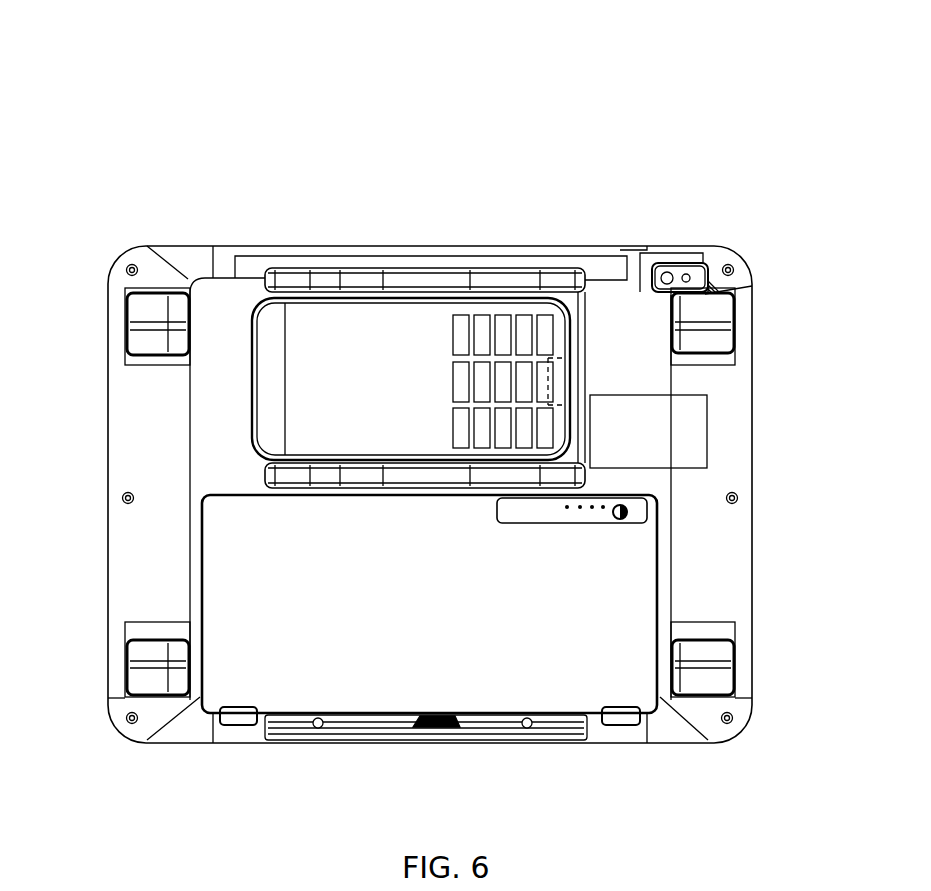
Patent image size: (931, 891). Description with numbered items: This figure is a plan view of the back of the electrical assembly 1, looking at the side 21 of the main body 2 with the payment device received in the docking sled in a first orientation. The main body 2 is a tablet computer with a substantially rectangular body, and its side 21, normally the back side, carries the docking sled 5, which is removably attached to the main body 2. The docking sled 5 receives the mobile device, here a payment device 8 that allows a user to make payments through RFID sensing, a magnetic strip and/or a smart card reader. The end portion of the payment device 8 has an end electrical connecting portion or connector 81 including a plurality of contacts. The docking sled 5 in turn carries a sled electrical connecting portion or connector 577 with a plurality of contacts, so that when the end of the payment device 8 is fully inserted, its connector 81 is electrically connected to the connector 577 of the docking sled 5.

The assembly 1 is at (740, 127).
The main body 2 is at (744, 397).
The side 21 is at (218, 407).
The docking sled 5 is at (472, 270).
The payment device 8 is at (344, 314).
The end electrical connecting portion 81 is at (570, 348).
The sled electrical connecting portion 577 is at (555, 378).